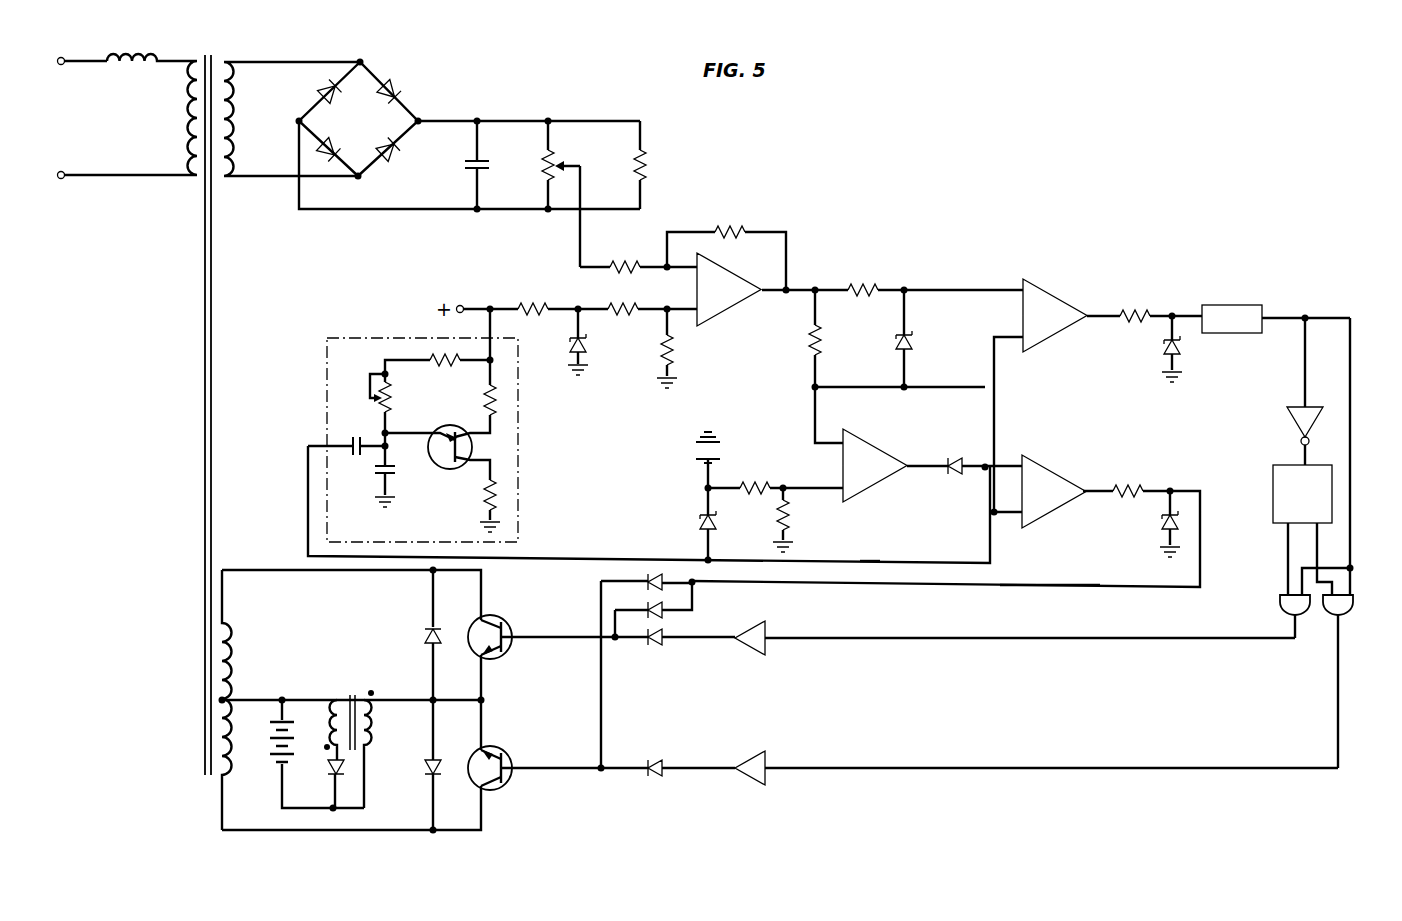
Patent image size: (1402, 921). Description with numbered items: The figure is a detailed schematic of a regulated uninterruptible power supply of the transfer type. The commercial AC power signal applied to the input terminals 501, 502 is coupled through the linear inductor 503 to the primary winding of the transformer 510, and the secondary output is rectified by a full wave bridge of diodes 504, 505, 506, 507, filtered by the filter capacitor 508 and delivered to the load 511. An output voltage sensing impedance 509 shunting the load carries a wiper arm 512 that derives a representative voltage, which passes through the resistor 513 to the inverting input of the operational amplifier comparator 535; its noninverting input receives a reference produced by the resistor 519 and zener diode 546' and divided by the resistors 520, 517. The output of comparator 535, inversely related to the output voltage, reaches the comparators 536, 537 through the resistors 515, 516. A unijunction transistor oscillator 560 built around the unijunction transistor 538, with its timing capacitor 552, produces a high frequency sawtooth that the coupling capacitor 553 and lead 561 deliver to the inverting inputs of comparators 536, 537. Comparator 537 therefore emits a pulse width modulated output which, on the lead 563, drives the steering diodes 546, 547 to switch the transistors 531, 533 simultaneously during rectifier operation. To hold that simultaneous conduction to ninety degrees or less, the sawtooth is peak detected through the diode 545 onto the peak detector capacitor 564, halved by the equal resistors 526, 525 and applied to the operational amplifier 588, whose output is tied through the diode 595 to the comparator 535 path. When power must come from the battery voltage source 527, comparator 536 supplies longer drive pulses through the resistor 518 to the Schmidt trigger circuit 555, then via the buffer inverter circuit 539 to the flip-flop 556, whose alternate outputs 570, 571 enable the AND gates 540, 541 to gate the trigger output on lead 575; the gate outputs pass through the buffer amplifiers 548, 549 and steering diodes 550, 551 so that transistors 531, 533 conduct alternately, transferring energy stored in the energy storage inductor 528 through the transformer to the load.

The input terminal 501 is at (76, 49).
The input terminal 502 is at (115, 163).
The linear inductor 503 is at (146, 46).
The diode 504 is at (318, 86).
The diode 505 is at (334, 142).
The diode 506 is at (399, 86).
The diode 507 is at (394, 170).
The filter capacitor 508 is at (457, 165).
The output voltage sensing impedance 509 is at (530, 165).
The transformer 510 is at (228, 53).
The load 511 is at (657, 165).
The wiper arm 512 is at (562, 162).
The resistor 513 is at (638, 257).
The resistor 515 is at (918, 277).
The resistor 516 is at (897, 340).
The resistor 517 is at (685, 348).
The resistor 518 is at (1159, 334).
The resistor 519 is at (535, 299).
The resistor 520 is at (651, 299).
The resistor 525 is at (774, 476).
The resistor 526 is at (801, 520).
The battery voltage source 527 is at (268, 770).
The energy storage inductor 528 is at (378, 752).
The switching transistor 531 is at (502, 626).
The switching transistor 533 is at (502, 758).
The operational amplifier comparator 535 is at (741, 276).
The operational amplifier comparator 536 is at (1057, 391).
The operational amplifier comparator 537 is at (946, 517).
The unijunction transistor 538 is at (449, 436).
The buffer inverter circuit 539 is at (1287, 391).
The AND gate 540 is at (1275, 616).
The AND gate 541 is at (1357, 681).
The diode 545 is at (688, 526).
The steering diode 546 is at (648, 609).
The zener diode 546' is at (602, 342).
The steering diode 547 is at (651, 578).
The buffer amplifier 548 is at (1036, 758).
The buffer amplifier 549 is at (1015, 628).
The steering diode 550 is at (651, 648).
The steering diode 551 is at (618, 757).
The capacitor 552 is at (404, 476).
The coupling capacitor 553 is at (356, 407).
The Schmidt trigger circuit 555 is at (1216, 305).
The flip-flop 556 is at (1272, 494).
The unijunction transistor oscillator 560 is at (368, 338).
The lead 561 is at (864, 559).
The lead 563 is at (1038, 586).
The peak detector capacitor 564 is at (688, 460).
The flip-flop output 570 is at (1286, 548).
The flip-flop output 571 is at (1319, 549).
The lead 575 is at (1352, 443).
The operational amplifier 588 is at (881, 444).
The diode 595 is at (980, 454).